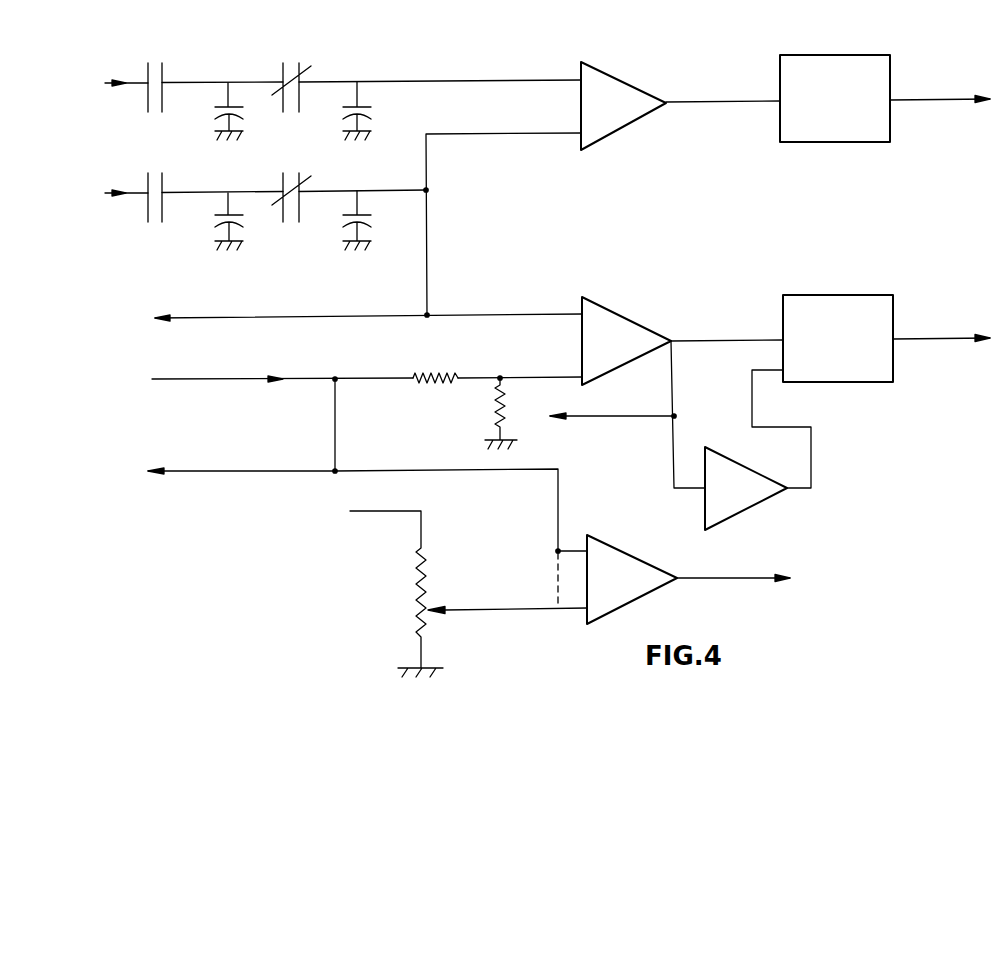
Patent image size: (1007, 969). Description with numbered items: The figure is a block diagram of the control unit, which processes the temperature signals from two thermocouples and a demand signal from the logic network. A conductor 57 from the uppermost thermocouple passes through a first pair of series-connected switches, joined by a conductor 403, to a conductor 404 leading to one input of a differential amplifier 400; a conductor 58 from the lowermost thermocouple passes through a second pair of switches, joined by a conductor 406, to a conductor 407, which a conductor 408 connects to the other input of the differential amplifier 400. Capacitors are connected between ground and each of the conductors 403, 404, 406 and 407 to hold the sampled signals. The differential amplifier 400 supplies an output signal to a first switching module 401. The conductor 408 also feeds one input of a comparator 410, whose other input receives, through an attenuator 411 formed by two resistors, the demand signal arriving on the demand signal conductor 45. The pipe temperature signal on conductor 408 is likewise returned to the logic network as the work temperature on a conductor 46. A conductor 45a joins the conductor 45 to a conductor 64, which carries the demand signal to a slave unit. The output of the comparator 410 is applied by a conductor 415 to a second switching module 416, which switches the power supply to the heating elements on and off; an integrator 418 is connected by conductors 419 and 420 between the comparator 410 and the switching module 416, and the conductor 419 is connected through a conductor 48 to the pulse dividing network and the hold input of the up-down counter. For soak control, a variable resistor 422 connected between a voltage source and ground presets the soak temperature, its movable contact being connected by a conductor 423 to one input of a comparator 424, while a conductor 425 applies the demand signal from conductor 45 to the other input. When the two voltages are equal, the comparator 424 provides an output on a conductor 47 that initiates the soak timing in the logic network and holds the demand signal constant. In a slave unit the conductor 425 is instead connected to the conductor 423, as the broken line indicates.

The conductor 57 is at (133, 85).
The conductor 58 is at (130, 195).
The conductor 403 is at (190, 83).
The conductor 404 is at (415, 81).
The conductor 406 is at (190, 193).
The conductor 407 is at (345, 192).
The conductor 408 is at (472, 134).
The differential amplifier 400 is at (623, 112).
The switching module 401 is at (840, 79).
The conductor 46 is at (305, 318).
The demand signal conductor 45 is at (300, 379).
The attenuator 411 is at (479, 380).
The comparator 410 is at (625, 353).
The conductor 415 is at (718, 340).
The switching module 416 is at (853, 316).
The conductor 419 is at (677, 392).
The conductor 48 is at (641, 414).
The conductor 420 is at (797, 427).
The integrator 418 is at (742, 501).
The conductor 64 is at (270, 471).
The conductor 45a is at (335, 462).
The conductor 425 is at (458, 466).
The comparator 424 is at (630, 588).
The conductor 47 is at (683, 577).
The variable resistor 422 is at (425, 629).
The conductor 423 is at (470, 609).